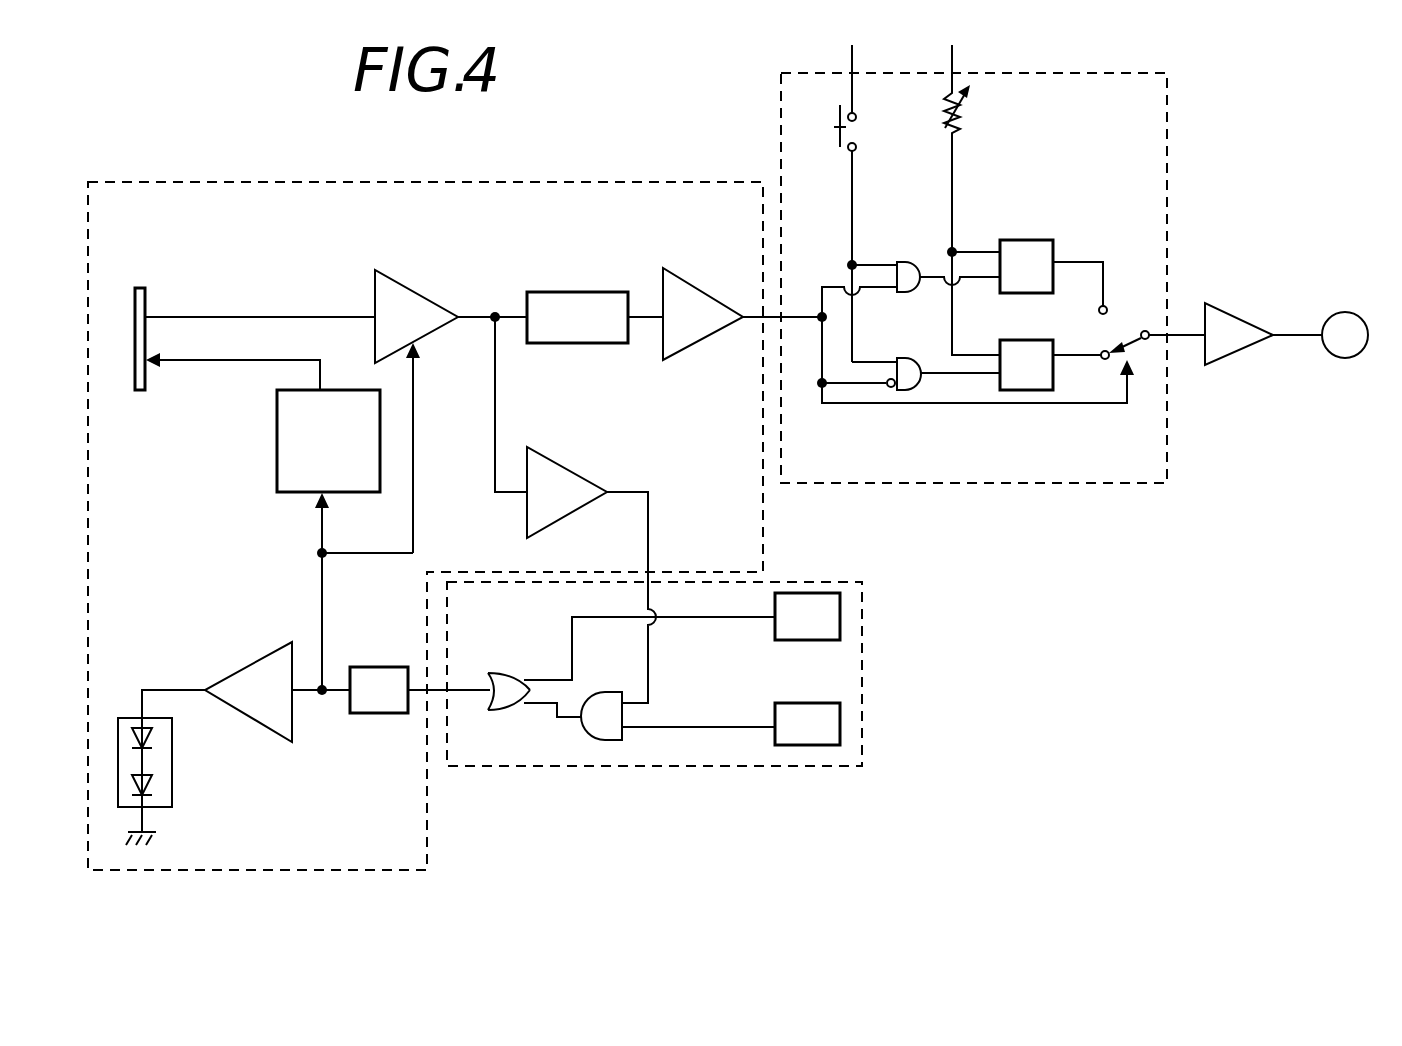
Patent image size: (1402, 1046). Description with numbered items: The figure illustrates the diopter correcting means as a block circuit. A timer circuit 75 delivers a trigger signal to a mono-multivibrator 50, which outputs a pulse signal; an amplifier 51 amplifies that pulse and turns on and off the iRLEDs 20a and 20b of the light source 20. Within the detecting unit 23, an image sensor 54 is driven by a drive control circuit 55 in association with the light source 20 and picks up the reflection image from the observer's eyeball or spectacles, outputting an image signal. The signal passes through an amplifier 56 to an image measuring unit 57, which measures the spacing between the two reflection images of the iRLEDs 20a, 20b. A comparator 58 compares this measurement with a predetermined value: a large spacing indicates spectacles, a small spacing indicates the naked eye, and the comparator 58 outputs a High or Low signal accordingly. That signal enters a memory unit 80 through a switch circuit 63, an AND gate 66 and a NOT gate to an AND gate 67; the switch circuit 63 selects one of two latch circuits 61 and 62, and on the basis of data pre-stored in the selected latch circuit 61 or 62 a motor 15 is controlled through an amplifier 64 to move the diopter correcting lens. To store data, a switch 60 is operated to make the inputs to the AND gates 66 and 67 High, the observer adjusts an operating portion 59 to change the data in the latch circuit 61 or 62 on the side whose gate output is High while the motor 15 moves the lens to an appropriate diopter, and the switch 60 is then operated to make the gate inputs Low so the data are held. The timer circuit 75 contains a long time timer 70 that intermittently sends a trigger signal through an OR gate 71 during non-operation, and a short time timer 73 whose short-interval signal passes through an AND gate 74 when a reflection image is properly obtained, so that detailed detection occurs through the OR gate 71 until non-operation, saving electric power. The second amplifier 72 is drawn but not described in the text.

The motor 15 is at (1360, 313).
The light source 20 is at (178, 781).
The iRLED 20a is at (160, 782).
The iRLED 20b is at (160, 744).
The detecting unit 23 is at (642, 182).
The mono-multivibrator 50 is at (386, 667).
The amplifier 51 is at (243, 667).
The image sensor 54 is at (149, 290).
The drive control circuit 55 is at (277, 445).
The amplifier 56 is at (421, 294).
The image measuring unit 57 is at (588, 292).
The comparator 58 is at (711, 297).
The operating portion 59 is at (963, 126).
The switch 60 is at (840, 148).
The latch circuit 61 is at (1036, 241).
The latch circuit 62 is at (1041, 391).
The switch circuit 63 is at (1118, 321).
The amplifier 64 is at (1253, 316).
The AND gate 66 is at (911, 262).
The AND gate 67 is at (909, 391).
The long time timer 70 is at (816, 593).
The OR gate 71 is at (519, 674).
The amplifier 72 is at (585, 479).
The short time timer 73 is at (830, 747).
The AND gate 74 is at (614, 742).
The timer circuit 75 is at (864, 628).
The memory unit 80 is at (1167, 140).